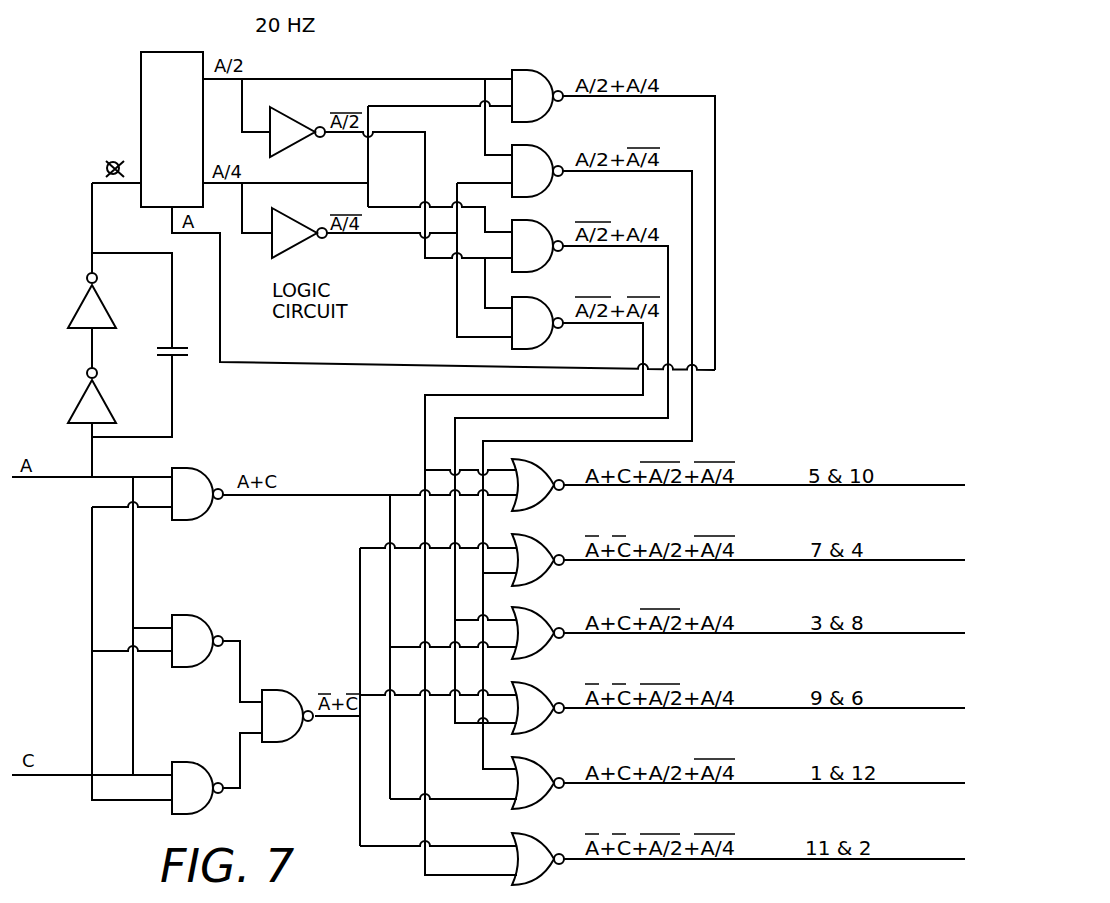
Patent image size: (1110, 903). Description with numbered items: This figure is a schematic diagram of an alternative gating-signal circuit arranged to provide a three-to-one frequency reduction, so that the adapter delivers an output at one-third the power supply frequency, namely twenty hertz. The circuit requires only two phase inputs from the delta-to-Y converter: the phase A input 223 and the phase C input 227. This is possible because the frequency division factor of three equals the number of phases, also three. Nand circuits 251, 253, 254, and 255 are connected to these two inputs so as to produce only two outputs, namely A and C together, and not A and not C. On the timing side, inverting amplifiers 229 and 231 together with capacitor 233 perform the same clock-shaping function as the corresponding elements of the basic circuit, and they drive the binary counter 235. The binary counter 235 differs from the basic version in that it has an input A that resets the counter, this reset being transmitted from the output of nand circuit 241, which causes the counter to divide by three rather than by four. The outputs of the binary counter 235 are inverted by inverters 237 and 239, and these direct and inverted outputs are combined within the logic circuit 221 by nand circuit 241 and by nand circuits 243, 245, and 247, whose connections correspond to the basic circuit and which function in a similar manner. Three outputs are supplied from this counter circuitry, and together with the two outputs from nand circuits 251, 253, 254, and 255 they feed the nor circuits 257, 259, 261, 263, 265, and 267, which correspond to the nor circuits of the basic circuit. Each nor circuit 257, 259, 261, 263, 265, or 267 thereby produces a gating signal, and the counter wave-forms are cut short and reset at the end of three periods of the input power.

The logic circuit 221 is at (322, 358).
The phase A input 223 is at (32, 481).
The phase C input 227 is at (34, 778).
The inverting amplifier 229 is at (113, 410).
The inverting amplifier 231 is at (110, 314).
The capacitor 233 is at (183, 362).
The binary counter 235 is at (141, 104).
The inverter 237 is at (275, 110).
The inverter 239 is at (280, 212).
The nand circuit 241 is at (532, 72).
The nand circuit 243 is at (537, 147).
The nand circuit 245 is at (537, 222).
The nand circuit 247 is at (537, 296).
The nand circuit 251 is at (228, 470).
The nand circuit 253 is at (194, 619).
The nand circuit 254 is at (266, 690).
The nand circuit 255 is at (168, 765).
The nor circuit 257 is at (545, 508).
The nor circuit 259 is at (545, 583).
The nor circuit 261 is at (547, 657).
The nor circuit 263 is at (550, 733).
The nor circuit 265 is at (550, 807).
The nor circuit 267 is at (550, 883).